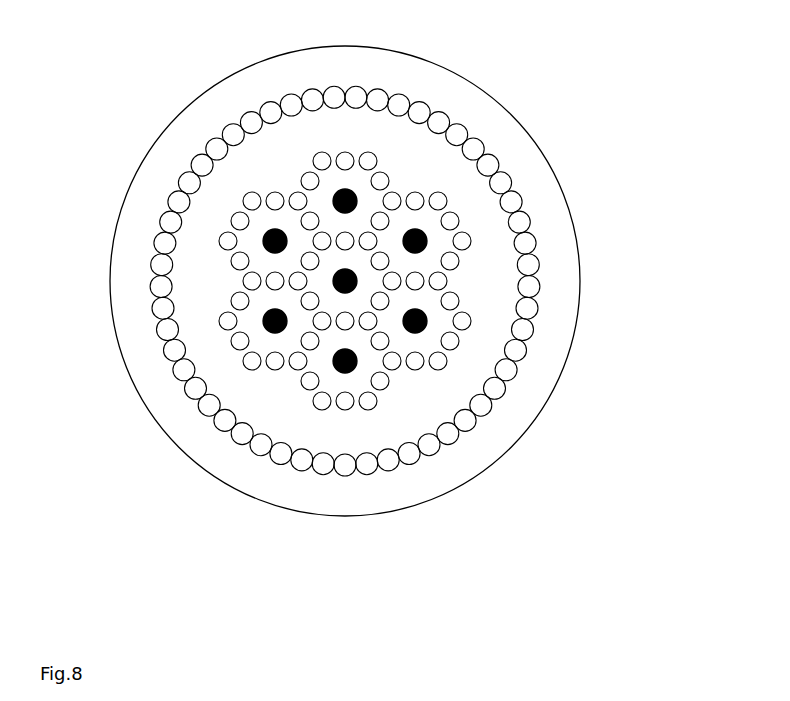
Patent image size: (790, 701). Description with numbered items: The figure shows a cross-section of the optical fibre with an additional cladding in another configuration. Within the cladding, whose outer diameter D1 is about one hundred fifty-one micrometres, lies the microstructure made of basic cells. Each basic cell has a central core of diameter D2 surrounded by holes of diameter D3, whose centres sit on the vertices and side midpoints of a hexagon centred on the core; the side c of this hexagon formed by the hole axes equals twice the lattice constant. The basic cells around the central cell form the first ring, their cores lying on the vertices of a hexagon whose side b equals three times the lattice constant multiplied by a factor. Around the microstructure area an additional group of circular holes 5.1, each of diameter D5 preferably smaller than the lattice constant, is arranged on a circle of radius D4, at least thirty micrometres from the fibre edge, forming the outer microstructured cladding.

The outer diameter of the cladding D1 is at (298, 516).
The core diameter D2 is at (275, 253).
The hole diameter D3 is at (438, 192).
The radius of the additional cladding D4 is at (345, 97).
The hole diameter of the outer microstructured cladding D5 is at (236, 192).
The side of the hexagon of the first ring b is at (415, 241).
The side of the hexagon of the basic cell c is at (252, 370).
The holes making the additional cladding 5.1 is at (481, 405).